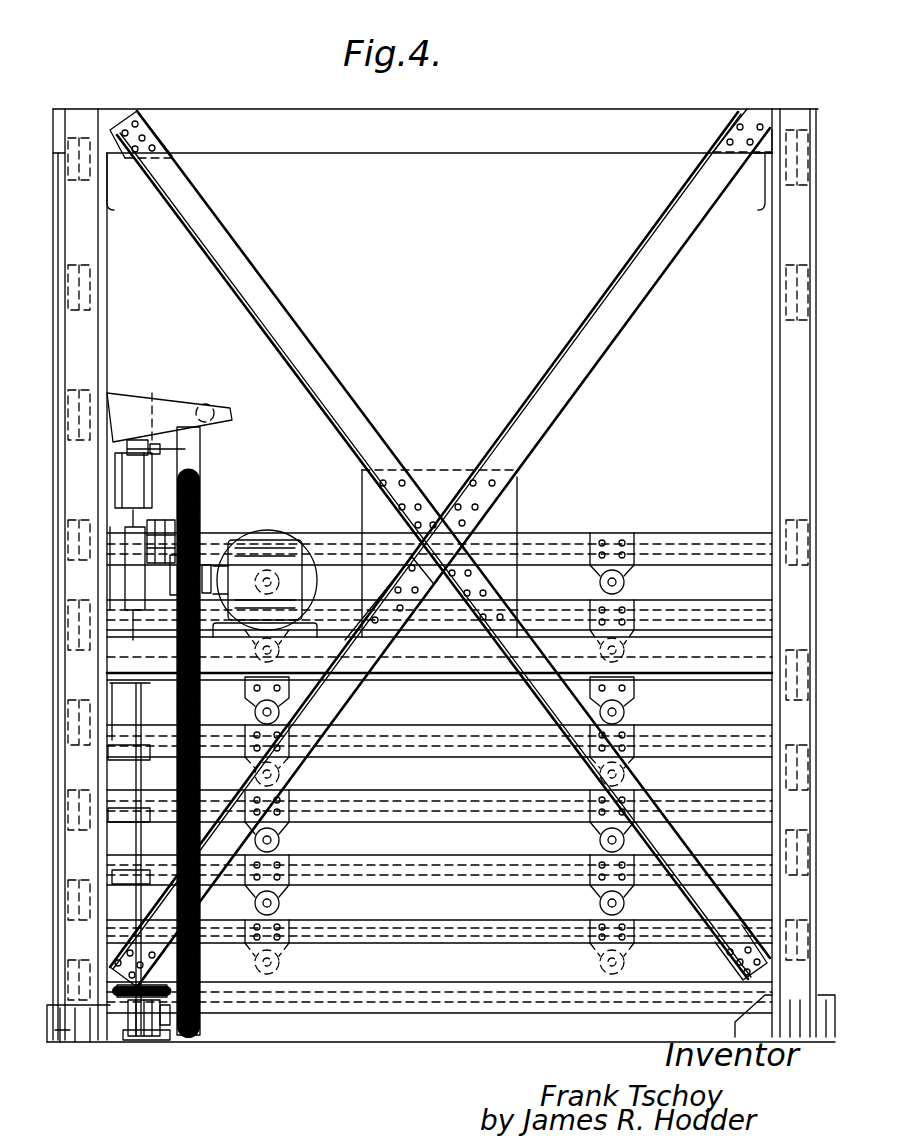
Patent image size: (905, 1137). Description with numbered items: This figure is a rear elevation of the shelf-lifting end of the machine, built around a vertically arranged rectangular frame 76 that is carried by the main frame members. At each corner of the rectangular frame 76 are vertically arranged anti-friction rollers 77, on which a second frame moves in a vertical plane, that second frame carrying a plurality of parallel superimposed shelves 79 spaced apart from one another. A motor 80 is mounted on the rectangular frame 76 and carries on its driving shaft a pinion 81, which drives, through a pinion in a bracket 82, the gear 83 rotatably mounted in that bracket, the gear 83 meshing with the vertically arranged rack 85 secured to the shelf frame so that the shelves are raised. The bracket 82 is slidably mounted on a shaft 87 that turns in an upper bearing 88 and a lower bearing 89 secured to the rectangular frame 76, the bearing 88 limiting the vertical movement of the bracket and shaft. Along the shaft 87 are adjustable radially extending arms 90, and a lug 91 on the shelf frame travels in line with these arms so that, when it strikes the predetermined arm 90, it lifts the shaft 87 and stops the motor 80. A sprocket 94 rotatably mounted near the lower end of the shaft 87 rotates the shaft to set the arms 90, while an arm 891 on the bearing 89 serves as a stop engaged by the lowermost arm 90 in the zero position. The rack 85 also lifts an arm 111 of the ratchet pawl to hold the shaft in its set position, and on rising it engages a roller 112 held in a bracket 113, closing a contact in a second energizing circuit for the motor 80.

The rectangular frame 76 is at (222, 117).
The anti-friction rollers 77 is at (80, 378).
The shelves 79 is at (700, 598).
The motor 80 is at (310, 578).
The pinion 81 is at (210, 575).
The bracket 82 is at (215, 545).
The gear 83 is at (253, 777).
The rack 85 is at (190, 776).
The shaft 87 is at (162, 518).
The bearing 88 is at (140, 475).
The bearing 89 is at (152, 1037).
The arm 891 is at (160, 1018).
The radially extending arms 90 is at (145, 688).
The lug 91 is at (167, 1020).
The sprocket 94 is at (157, 983).
The arm 111 is at (183, 450).
The roller 112 is at (218, 412).
The bracket 113 is at (150, 395).